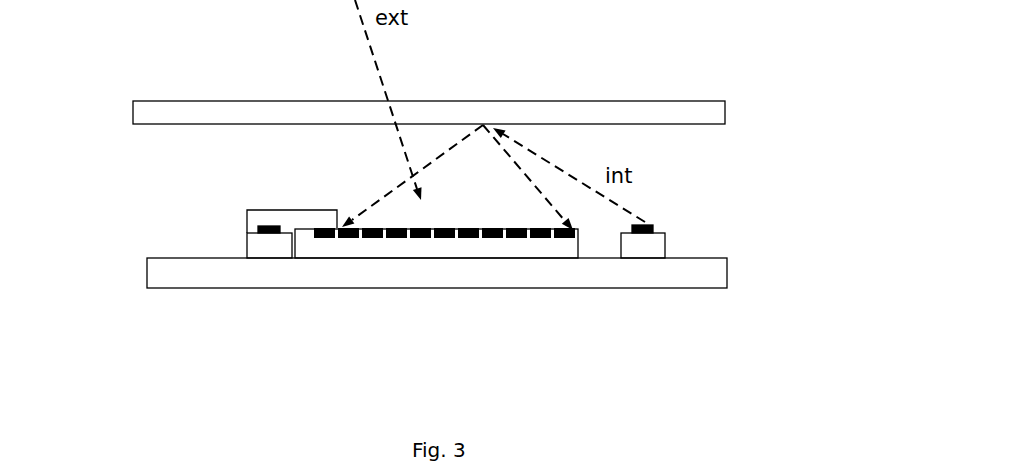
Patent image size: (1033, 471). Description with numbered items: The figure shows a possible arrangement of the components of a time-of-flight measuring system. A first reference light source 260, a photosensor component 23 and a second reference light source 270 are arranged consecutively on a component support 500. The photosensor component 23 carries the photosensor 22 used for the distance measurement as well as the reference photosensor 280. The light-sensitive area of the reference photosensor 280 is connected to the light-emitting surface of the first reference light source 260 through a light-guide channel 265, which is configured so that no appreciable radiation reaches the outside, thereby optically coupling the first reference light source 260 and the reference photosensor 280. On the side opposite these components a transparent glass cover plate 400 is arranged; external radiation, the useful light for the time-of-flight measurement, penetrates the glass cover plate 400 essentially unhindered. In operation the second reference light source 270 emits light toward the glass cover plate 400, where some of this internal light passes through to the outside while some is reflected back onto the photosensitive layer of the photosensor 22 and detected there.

The transparent glass cover plate 400 is at (715, 115).
The component support 500 is at (148, 272).
The light-guide channel 265 is at (262, 212).
The first reference light source 260 is at (268, 250).
The photosensor component 23 is at (552, 252).
The photosensor 22 is at (493, 237).
The reference photosensor 280 is at (327, 239).
The second reference light source 270 is at (650, 248).